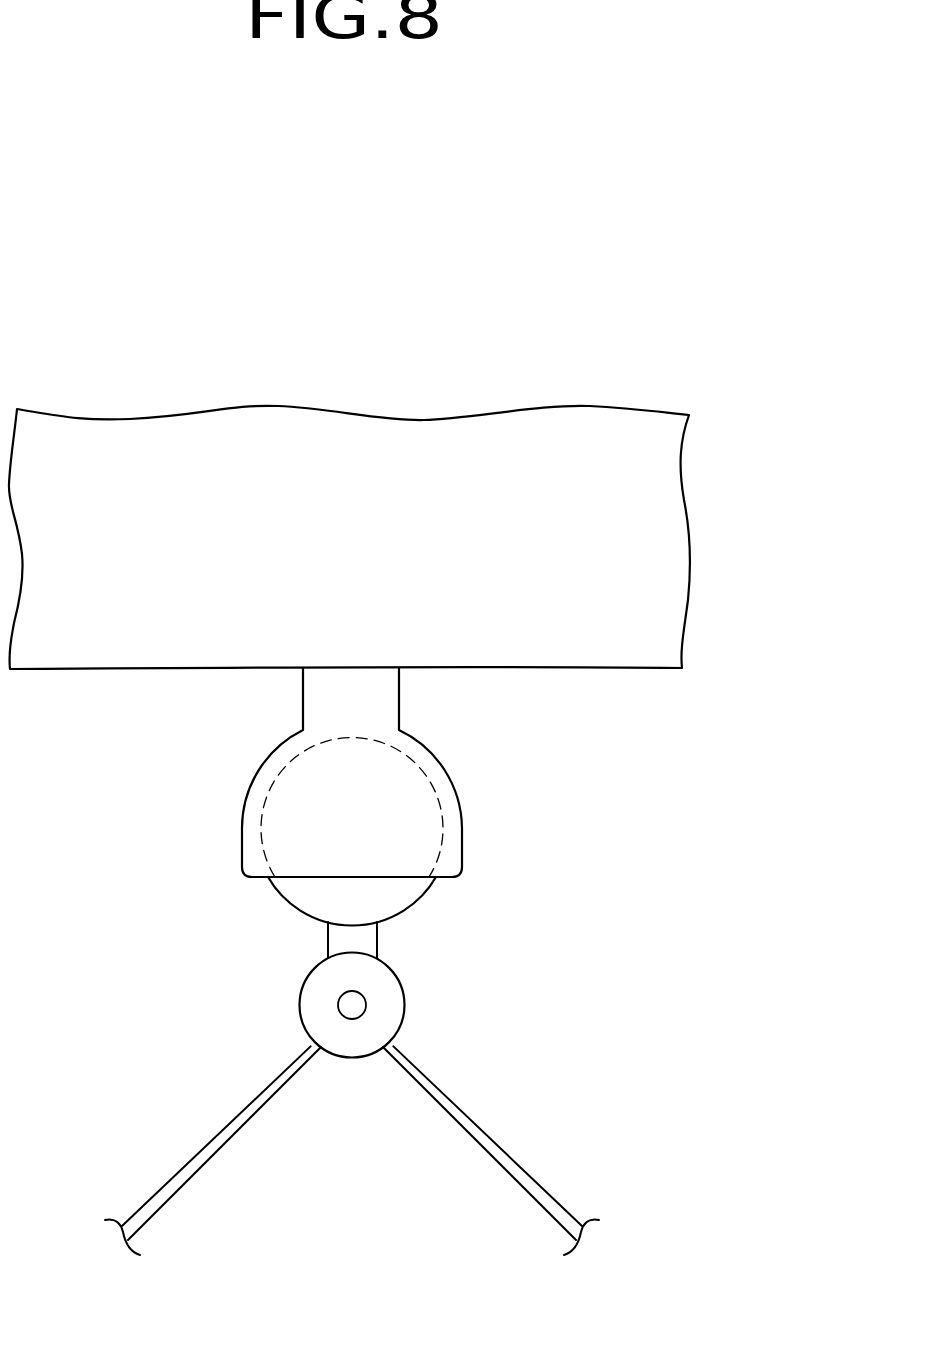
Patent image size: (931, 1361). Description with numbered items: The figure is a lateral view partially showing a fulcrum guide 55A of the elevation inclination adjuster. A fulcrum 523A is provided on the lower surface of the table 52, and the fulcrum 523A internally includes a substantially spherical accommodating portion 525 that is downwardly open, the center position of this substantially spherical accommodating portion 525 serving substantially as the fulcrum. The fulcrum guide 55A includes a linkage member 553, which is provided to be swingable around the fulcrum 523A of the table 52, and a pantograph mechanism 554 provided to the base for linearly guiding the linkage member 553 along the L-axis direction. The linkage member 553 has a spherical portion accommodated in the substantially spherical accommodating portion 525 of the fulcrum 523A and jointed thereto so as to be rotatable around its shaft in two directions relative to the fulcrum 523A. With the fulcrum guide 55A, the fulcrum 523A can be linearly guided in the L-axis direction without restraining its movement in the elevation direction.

The table 52 is at (554, 447).
The fulcrum 523A is at (457, 780).
The substantially spherical accommodating portion 525 is at (278, 777).
The linkage member 553 is at (418, 900).
The pantograph mechanism 554 is at (518, 1152).
The fulcrum guide 55A is at (368, 1200).